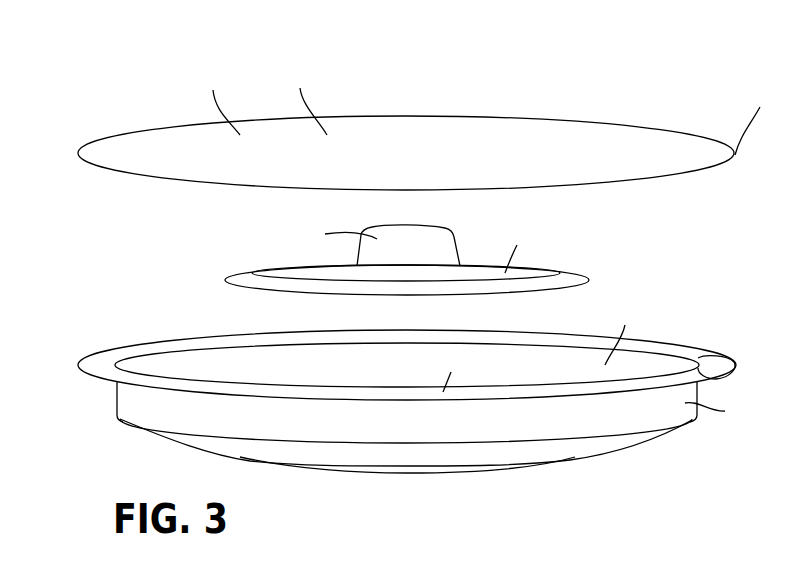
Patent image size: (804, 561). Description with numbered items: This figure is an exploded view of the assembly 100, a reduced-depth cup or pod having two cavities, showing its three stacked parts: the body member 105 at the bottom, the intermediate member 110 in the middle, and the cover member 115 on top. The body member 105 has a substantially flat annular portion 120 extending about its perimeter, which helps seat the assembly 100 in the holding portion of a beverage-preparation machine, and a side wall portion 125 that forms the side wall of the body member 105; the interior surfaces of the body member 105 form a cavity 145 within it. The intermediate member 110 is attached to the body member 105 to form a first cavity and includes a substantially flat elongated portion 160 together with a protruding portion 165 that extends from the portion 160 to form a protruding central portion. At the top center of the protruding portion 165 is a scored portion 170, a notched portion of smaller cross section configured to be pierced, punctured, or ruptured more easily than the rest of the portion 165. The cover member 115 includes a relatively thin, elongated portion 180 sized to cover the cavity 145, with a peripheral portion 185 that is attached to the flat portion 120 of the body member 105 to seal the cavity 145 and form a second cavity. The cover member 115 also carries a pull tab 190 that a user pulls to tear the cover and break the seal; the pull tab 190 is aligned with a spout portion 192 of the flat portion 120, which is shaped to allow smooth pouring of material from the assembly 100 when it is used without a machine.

The assembly 100 is at (683, 108).
The body member 105 is at (108, 335).
The intermediate member 110 is at (212, 243).
The cover member 115 is at (130, 108).
The substantially flat portion 120 is at (452, 369).
The side wall portion 125 is at (725, 414).
The cavity 145 is at (625, 331).
The substantially elongated portion 160 is at (517, 246).
The protruding portion 165 is at (332, 238).
The scored portion 170 is at (403, 225).
The thin elongated portion 180 is at (305, 99).
The peripheral portion 185 is at (219, 99).
The pull tab 190 is at (756, 117).
The spout portion 192 is at (716, 365).